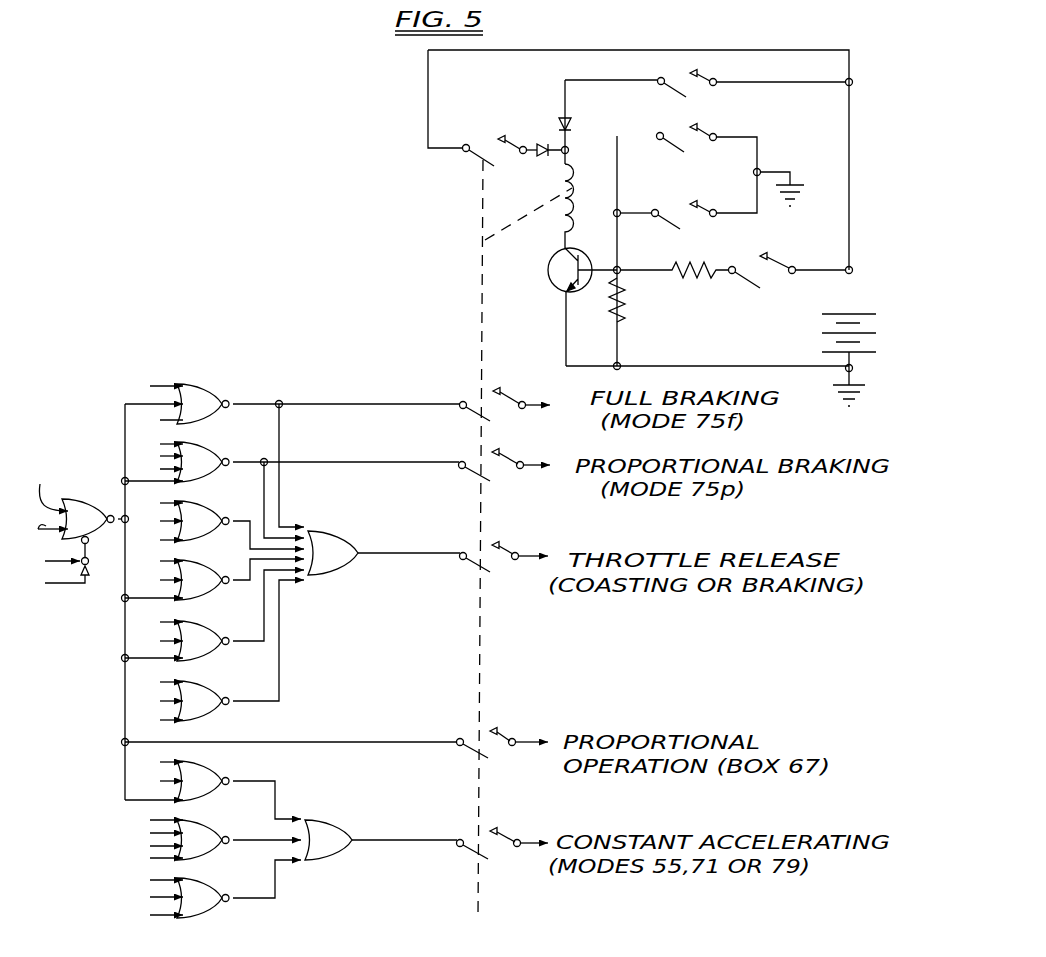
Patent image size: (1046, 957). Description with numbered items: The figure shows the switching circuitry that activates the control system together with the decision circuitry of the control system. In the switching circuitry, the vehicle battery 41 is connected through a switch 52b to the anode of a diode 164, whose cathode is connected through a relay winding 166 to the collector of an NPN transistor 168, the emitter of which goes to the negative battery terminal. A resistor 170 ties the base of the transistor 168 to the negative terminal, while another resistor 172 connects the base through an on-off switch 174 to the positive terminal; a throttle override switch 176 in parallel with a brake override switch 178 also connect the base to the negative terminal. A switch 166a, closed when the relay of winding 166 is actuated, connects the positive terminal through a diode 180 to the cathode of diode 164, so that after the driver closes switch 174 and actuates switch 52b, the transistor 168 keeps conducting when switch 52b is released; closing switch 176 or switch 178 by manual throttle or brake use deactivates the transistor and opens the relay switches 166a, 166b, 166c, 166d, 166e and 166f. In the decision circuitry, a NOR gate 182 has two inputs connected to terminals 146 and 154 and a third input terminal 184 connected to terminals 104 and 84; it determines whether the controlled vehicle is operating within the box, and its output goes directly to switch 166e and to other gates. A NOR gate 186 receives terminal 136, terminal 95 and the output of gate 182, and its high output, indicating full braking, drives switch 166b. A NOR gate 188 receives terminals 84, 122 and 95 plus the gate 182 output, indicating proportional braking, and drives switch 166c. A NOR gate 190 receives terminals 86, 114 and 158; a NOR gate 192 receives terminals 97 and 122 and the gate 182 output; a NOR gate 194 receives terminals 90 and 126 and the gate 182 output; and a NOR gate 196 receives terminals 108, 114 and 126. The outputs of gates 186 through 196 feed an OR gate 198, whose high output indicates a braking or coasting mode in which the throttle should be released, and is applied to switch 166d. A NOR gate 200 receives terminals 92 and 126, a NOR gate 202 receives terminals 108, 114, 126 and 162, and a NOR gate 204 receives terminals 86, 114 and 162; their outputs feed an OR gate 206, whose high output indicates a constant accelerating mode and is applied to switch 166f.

The switch 52b is at (700, 76).
The diode 164 is at (572, 125).
The relay actuated switch 166a is at (519, 121).
The diode 180 is at (548, 156).
The relay winding 166 is at (574, 190).
The NPN transistor 168 is at (558, 271).
The resistor 170 is at (626, 297).
The resistor 172 is at (704, 279).
The on-off switch 174 is at (779, 263).
The throttle override switch 176 is at (698, 208).
The brake override switch 178 is at (699, 130).
The vehicle battery 41 is at (838, 330).
The terminal 136 is at (160, 385).
The NOR gate 186 is at (305, 404).
The NOR gate 188 is at (318, 462).
The NOR gate 190 is at (240, 525).
The NOR gate 192 is at (240, 579).
The NOR gate 194 is at (240, 615).
The NOR gate 196 is at (240, 650).
The OR gate 198 is at (362, 489).
The NOR gate 200 is at (239, 790).
The NOR gate 202 is at (239, 840).
The NOR gate 204 is at (239, 889).
The OR gate 206 is at (381, 840).
The NOR gate 182 is at (92, 532).
The terminal 146 is at (51, 487).
The terminal 154 is at (44, 539).
The third input terminal 184 is at (90, 565).
The terminal 104 is at (58, 562).
The terminal 84 is at (71, 585).
The terminal 95 is at (159, 444).
The terminal 122 is at (154, 518).
The terminal 158 is at (154, 503).
The terminal 114 is at (148, 709).
The terminal 86 is at (153, 710).
The terminal 97 is at (159, 561).
The terminal 90 is at (159, 622).
The terminal 126 is at (148, 743).
The terminal 108 is at (148, 770).
The terminal 92 is at (159, 762).
The terminal 162 is at (148, 886).
The relay actuated switch 166b is at (508, 396).
The relay actuated switch 166c is at (507, 458).
The relay actuated switch 166d is at (506, 550).
The relay actuated switch 166e is at (505, 737).
The relay actuated switch 166f is at (507, 838).